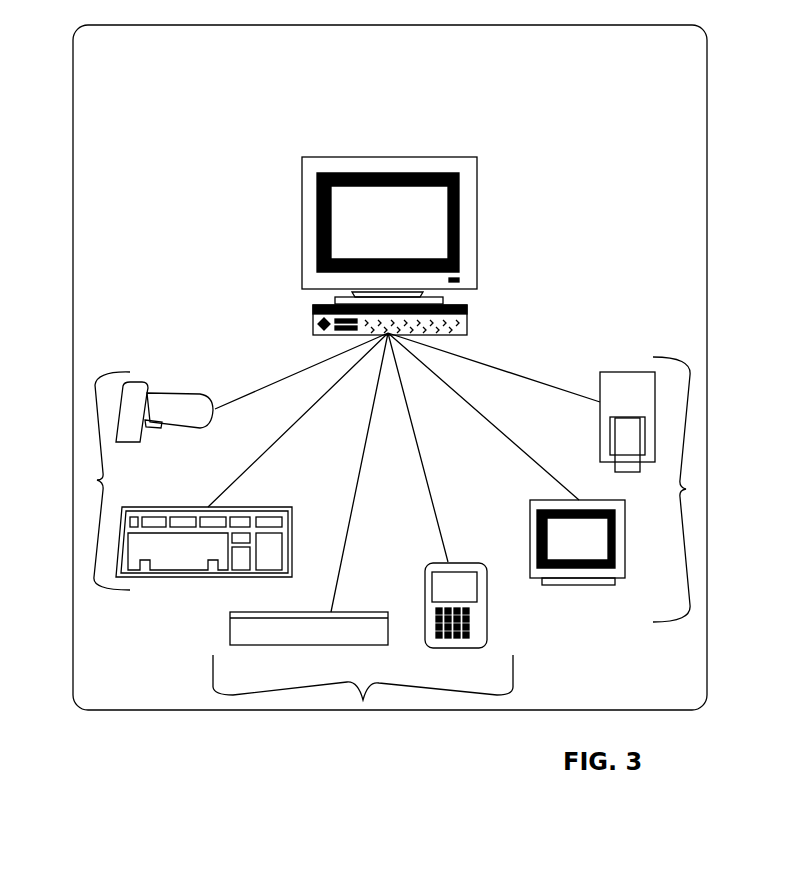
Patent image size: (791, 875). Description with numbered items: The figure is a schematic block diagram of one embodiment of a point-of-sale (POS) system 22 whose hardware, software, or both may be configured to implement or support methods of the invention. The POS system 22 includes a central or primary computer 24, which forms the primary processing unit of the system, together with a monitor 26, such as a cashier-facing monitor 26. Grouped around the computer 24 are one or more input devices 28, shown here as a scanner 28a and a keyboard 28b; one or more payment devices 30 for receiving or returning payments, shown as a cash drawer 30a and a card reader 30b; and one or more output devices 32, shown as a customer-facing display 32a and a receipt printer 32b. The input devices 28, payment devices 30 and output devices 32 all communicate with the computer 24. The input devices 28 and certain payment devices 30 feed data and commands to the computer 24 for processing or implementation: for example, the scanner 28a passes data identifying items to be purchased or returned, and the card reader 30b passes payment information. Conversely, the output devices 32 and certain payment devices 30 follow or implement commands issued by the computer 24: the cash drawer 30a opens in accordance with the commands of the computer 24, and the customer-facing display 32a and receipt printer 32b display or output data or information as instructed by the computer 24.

The point-of-sale (POS) system 22 is at (390, 367).
The computer 24 is at (480, 305).
The monitor 26 is at (288, 196).
The input devices 28 is at (90, 479).
The scanner 28a is at (178, 410).
The keyboard 28b is at (267, 517).
The payment devices 30 is at (363, 700).
The cash drawer 30a is at (310, 630).
The card reader 30b is at (447, 565).
The output devices 32 is at (683, 490).
The customer-facing display 32a is at (575, 550).
The receipt printer 32b is at (618, 392).